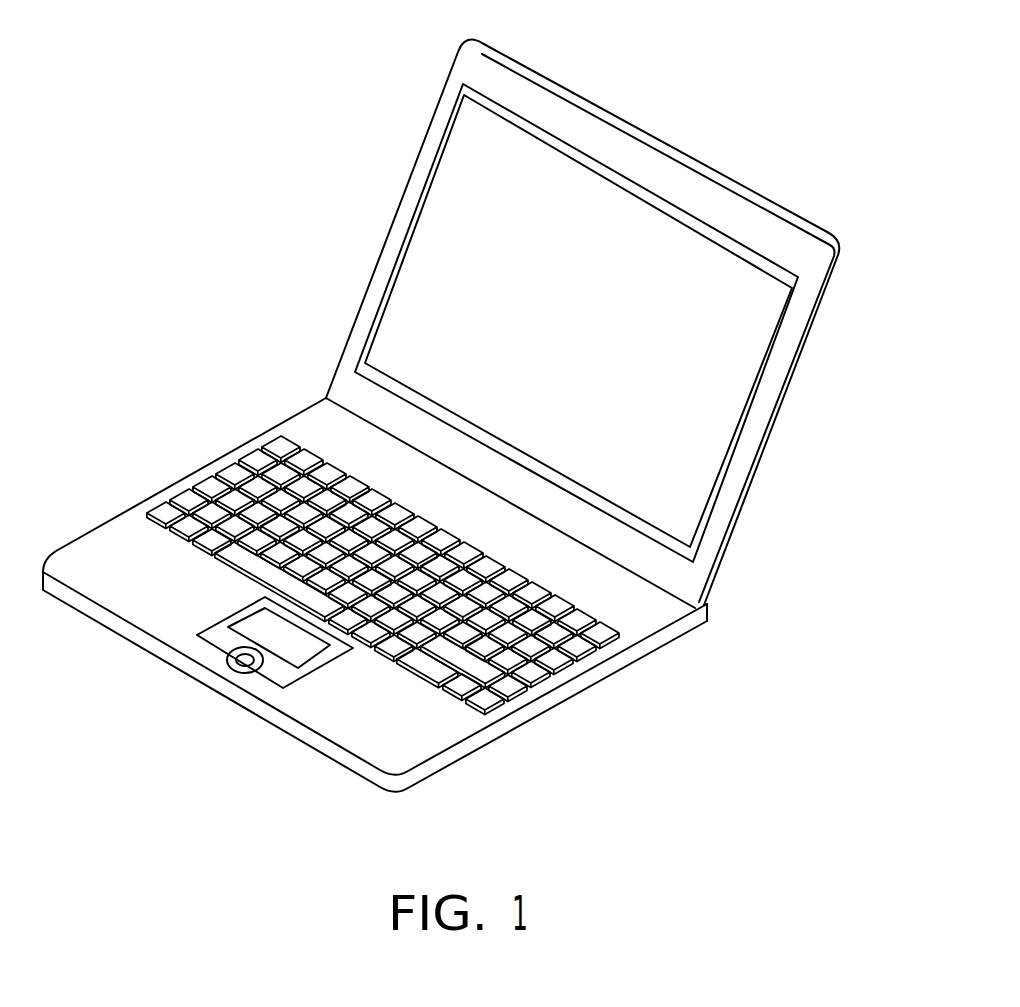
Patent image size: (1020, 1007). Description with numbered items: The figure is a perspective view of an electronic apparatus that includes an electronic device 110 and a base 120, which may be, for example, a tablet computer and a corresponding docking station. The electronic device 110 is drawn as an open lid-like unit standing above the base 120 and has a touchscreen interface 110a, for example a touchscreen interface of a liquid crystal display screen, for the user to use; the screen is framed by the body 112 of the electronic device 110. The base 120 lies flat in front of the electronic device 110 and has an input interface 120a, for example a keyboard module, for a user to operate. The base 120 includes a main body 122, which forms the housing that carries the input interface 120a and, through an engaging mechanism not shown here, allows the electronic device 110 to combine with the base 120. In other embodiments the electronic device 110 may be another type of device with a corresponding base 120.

The electronic device 110 is at (615, 324).
The touchscreen interface 110a is at (455, 187).
The body 112 is at (752, 473).
The base 120 is at (375, 589).
The input interface 120a is at (248, 508).
The main body 122 is at (585, 682).